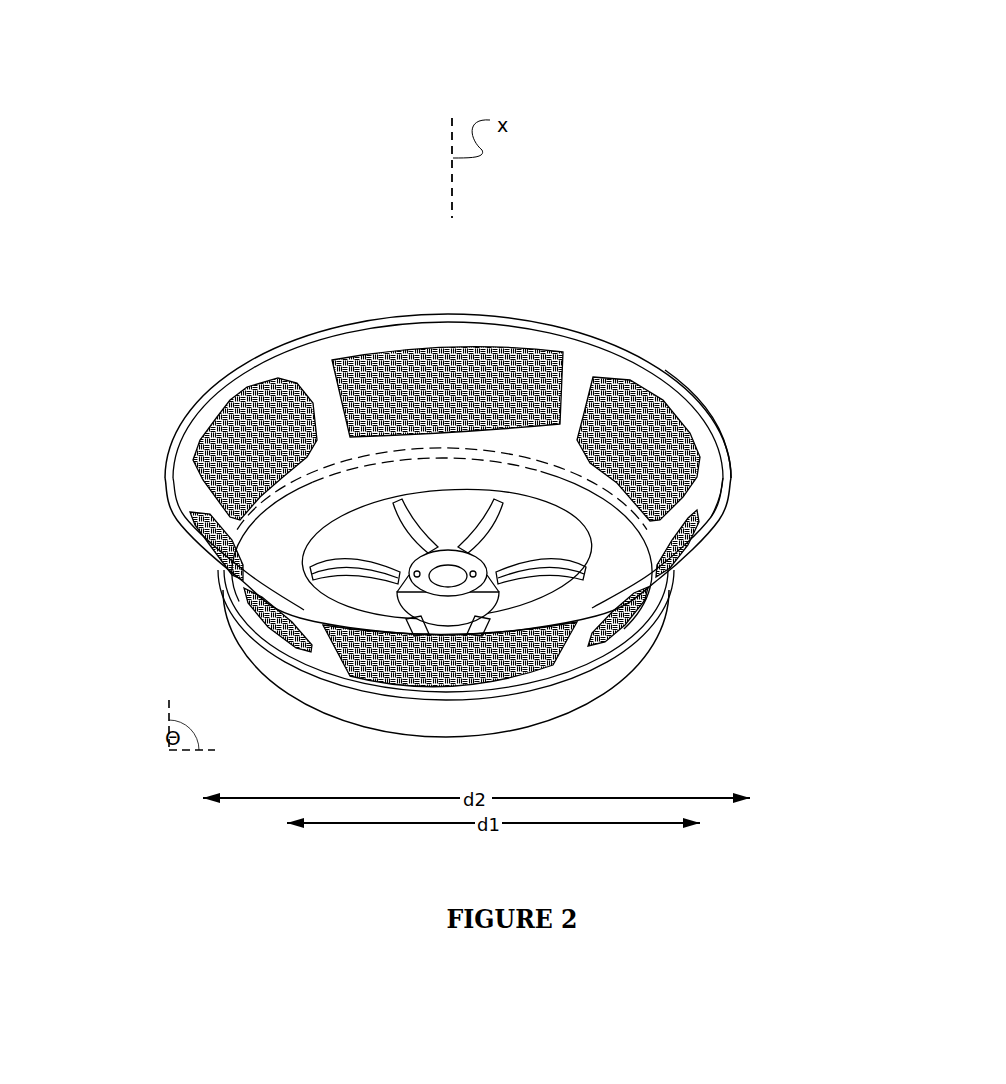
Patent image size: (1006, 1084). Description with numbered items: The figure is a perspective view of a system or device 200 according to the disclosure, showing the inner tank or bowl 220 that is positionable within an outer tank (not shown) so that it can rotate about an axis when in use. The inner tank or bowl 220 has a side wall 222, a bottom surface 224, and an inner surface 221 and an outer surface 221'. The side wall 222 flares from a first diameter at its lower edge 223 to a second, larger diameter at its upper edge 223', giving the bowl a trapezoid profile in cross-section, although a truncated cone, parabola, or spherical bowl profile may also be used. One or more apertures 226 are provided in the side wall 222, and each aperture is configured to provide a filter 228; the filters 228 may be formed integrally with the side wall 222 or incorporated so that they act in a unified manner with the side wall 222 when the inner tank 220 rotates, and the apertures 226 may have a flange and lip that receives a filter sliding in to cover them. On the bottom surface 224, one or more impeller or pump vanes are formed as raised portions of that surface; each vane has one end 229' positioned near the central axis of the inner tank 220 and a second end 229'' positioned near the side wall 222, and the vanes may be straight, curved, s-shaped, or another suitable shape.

The system or device 200 is at (932, 133).
The inner tank or bowl 220 is at (621, 205).
The inner surface 221 is at (448, 433).
The outer surface 221' is at (255, 415).
The side wall 222 is at (720, 478).
The lower edge 223 is at (472, 653).
The upper edge 223' is at (721, 403).
The bottom surface 224 is at (655, 400).
The apertures 226 is at (717, 528).
The filter 228 is at (495, 342).
The one end of impeller vane 229' is at (262, 567).
The second end of impeller vane 229'' is at (358, 447).